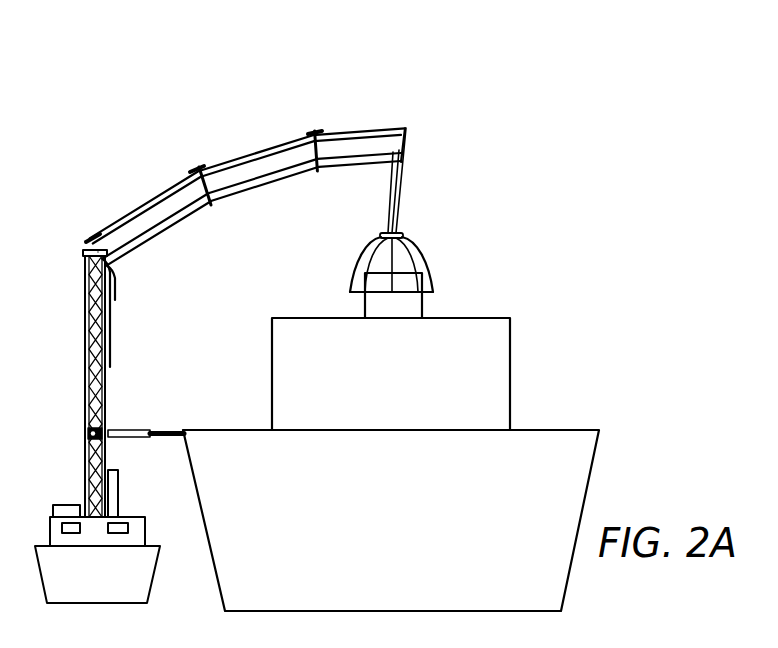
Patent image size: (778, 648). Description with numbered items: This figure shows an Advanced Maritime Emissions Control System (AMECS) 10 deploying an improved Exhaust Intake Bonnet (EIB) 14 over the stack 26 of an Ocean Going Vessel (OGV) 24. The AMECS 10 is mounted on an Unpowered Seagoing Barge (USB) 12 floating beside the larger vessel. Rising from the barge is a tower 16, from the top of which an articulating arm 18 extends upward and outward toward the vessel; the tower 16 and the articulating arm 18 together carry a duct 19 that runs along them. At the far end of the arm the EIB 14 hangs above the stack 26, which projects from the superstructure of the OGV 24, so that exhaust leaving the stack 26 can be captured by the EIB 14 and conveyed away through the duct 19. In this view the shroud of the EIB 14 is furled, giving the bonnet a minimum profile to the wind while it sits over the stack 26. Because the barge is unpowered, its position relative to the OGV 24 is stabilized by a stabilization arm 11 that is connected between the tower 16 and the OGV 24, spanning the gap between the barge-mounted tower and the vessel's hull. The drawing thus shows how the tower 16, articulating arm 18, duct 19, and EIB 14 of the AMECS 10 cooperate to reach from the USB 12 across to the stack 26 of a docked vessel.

The Advanced Maritime Emissions Control System 10 is at (152, 125).
The stabilization arm 11 is at (132, 435).
The Unpowered Seagoing Barge 12 is at (45, 560).
The Exhaust Intake Bonnet 14 is at (402, 250).
The tower 16 is at (97, 360).
The articulating arm 18 is at (277, 145).
The duct 19 is at (238, 195).
The Ocean Going Vessel 24 is at (475, 363).
The stack 26 is at (380, 308).